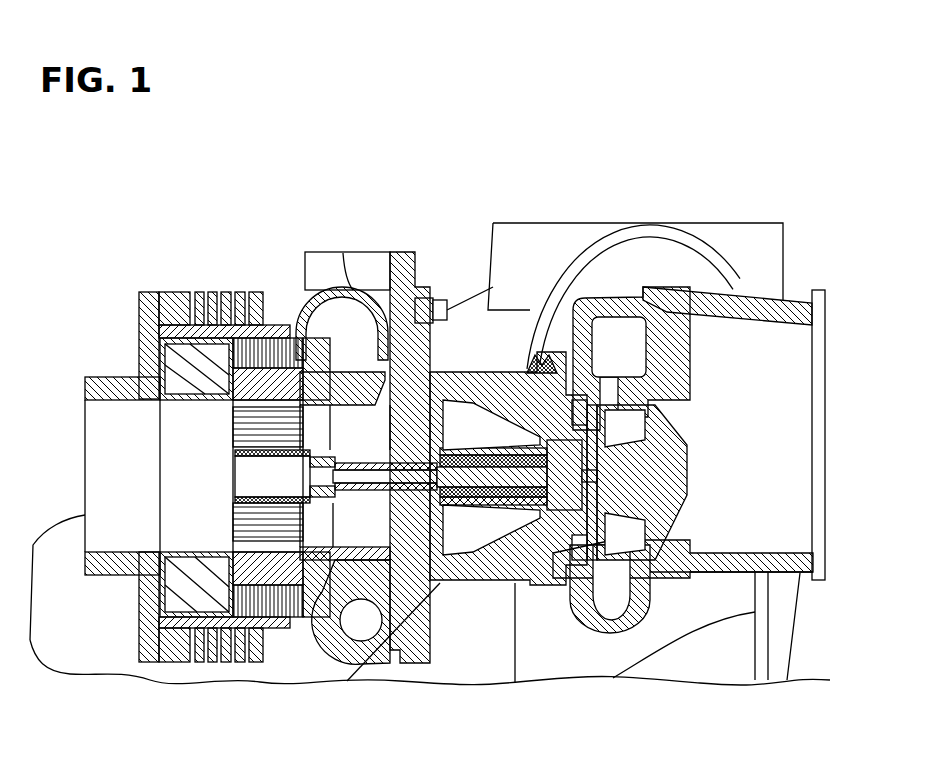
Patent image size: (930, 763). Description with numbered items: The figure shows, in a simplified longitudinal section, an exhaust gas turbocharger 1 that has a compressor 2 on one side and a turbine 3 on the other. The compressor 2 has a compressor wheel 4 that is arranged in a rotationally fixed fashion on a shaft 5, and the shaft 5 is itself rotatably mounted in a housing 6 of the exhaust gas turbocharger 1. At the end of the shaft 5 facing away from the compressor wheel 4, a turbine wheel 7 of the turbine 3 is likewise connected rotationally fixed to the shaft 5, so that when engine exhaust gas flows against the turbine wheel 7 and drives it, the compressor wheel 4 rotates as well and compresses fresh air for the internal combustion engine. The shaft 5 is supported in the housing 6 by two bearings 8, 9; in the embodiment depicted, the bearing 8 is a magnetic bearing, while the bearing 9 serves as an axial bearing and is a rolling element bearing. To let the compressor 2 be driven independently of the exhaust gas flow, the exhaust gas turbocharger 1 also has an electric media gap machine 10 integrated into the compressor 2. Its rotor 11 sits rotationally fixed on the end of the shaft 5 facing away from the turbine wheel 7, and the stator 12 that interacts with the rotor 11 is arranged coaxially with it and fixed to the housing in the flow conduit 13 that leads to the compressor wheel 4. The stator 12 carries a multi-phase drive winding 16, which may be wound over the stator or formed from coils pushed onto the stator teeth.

The exhaust gas turbocharger 1 is at (152, 278).
The compressor 2 is at (340, 385).
The turbine 3 is at (605, 378).
The compressor wheel 4 is at (363, 330).
The shaft 5 is at (482, 473).
The housing 6 is at (537, 293).
The turbine wheel 7 is at (683, 455).
The bearing 8 is at (490, 520).
The bearing 9 is at (405, 535).
The electric media gap machine 10 is at (221, 565).
The rotor 11 is at (240, 487).
The stator 12 is at (226, 376).
The flow conduit 13 is at (185, 408).
The drive winding 16 is at (273, 610).